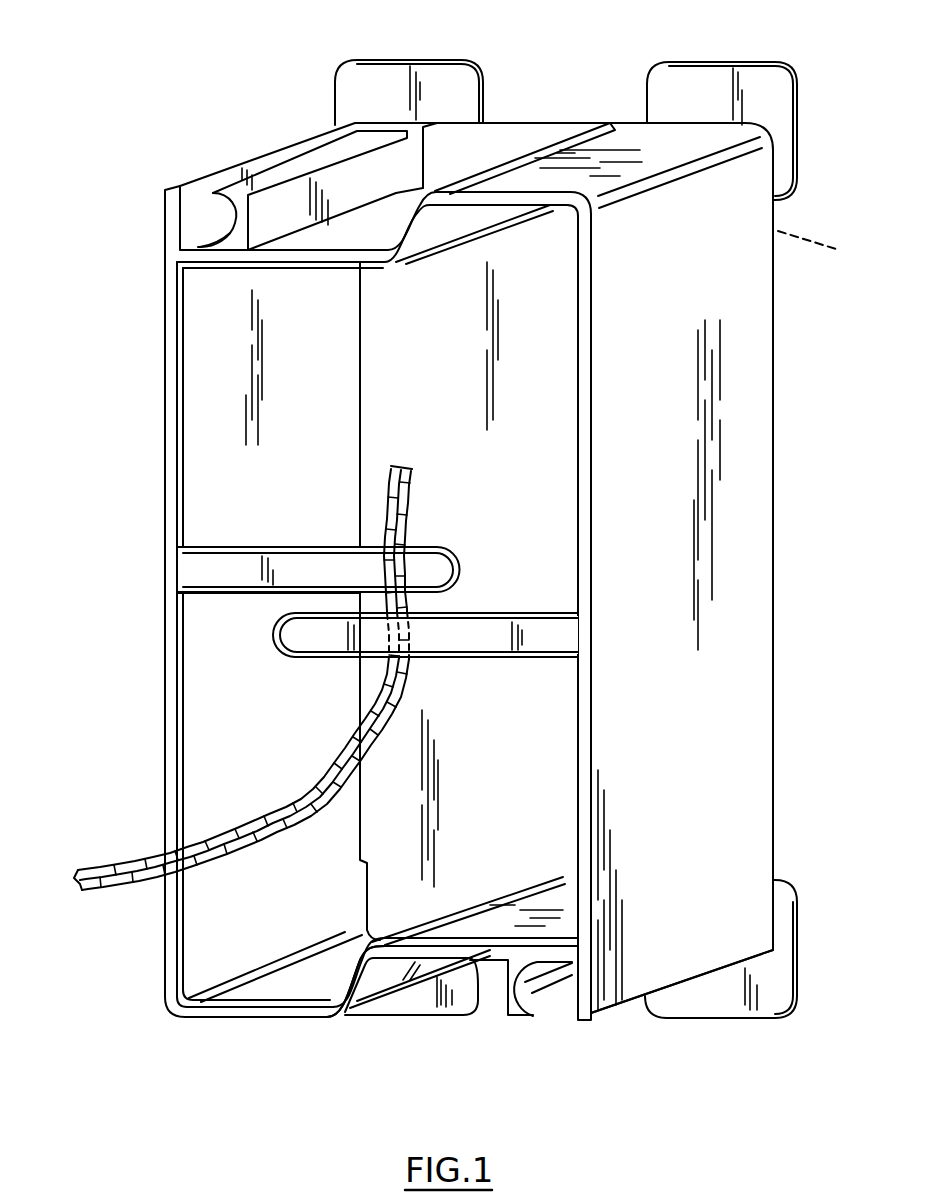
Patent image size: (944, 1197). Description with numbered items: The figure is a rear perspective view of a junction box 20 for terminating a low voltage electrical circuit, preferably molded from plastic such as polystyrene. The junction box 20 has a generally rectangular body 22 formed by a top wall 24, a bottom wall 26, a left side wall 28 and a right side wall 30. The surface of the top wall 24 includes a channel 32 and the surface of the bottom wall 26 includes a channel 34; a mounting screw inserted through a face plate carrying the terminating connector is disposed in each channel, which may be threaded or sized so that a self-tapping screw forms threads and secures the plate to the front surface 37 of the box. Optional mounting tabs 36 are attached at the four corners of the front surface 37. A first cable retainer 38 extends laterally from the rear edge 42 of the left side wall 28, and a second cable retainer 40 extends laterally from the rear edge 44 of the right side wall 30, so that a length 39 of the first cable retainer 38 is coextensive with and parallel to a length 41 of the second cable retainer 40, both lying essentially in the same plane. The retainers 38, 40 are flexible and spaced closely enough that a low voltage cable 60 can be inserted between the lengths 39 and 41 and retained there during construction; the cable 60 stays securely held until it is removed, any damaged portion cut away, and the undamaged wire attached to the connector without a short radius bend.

The junction box 20 is at (146, 390).
The body 22 is at (581, 112).
The top wall 24 is at (655, 138).
The bottom wall 26 is at (277, 990).
The left side wall 28 is at (210, 730).
The right side wall 30 is at (740, 627).
The channel 32 is at (207, 213).
The channel 34 is at (545, 1000).
The mounting tabs 36 is at (398, 58).
The front surface 37 is at (829, 250).
The first cable retainer 38 is at (248, 552).
The length 39 is at (322, 571).
The second cable retainer 40 is at (498, 611).
The length 41 is at (297, 637).
The rear edge 42 is at (166, 518).
The rear edge 44 is at (588, 490).
The low voltage cable 60 is at (420, 480).